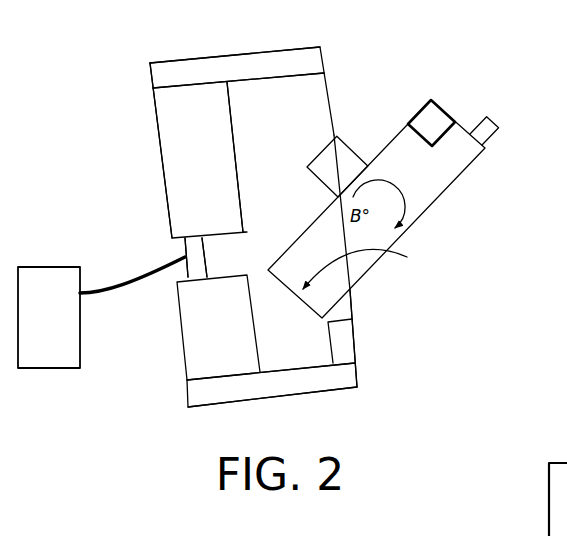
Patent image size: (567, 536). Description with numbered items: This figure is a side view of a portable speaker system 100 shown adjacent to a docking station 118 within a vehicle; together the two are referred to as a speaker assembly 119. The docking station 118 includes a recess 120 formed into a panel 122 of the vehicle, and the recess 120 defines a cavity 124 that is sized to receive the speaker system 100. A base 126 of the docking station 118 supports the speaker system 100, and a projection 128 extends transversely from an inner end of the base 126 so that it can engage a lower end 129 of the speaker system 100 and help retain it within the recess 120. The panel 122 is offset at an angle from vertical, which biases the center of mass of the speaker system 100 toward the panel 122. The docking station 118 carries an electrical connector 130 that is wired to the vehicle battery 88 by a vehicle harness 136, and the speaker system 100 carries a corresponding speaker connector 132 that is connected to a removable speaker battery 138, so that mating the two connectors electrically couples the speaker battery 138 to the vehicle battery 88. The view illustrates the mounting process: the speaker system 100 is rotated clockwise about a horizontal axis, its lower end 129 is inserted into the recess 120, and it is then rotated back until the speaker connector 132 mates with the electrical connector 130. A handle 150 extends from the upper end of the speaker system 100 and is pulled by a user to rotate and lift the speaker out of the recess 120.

The vehicle battery 88 is at (36, 330).
The speaker system 100 is at (450, 105).
The docking station 118 is at (163, 55).
The speaker assembly 119 is at (110, 147).
The recess 120 is at (324, 76).
The panel 122 is at (353, 298).
The cavity 124 is at (288, 160).
The base 126 is at (340, 393).
The projection 128 is at (357, 338).
The lower end 129 is at (372, 268).
The electrical connector 130 is at (182, 252).
The speaker connector 132 is at (326, 172).
The vehicle harness 136 is at (105, 294).
The speaker battery 138 is at (423, 118).
The handle 150 is at (497, 131).